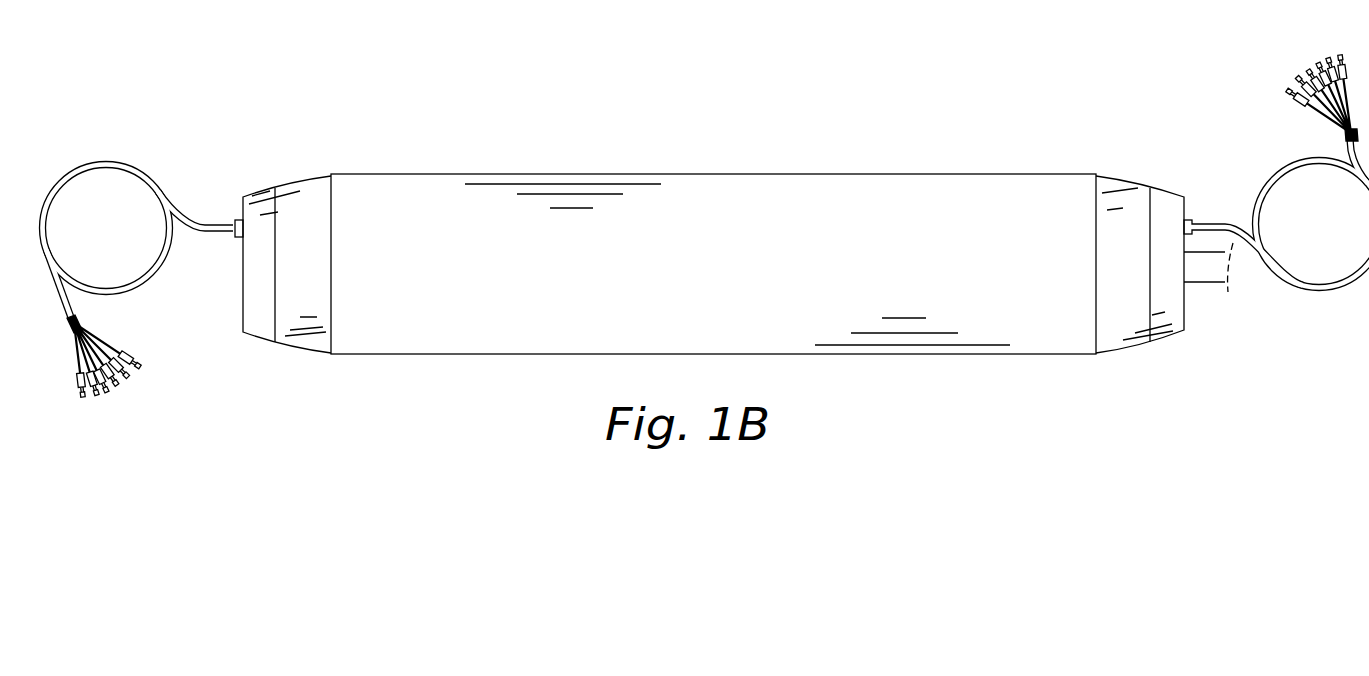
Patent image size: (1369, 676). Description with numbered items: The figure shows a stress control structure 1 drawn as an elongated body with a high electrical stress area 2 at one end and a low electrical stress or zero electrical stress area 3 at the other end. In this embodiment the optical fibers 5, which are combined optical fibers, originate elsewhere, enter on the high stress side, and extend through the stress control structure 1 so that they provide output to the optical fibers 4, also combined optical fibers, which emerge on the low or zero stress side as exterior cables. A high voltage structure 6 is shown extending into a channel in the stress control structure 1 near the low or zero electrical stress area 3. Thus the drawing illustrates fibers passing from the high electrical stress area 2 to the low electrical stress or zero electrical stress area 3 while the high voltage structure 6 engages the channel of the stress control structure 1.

The stress control structure 1 is at (718, 157).
The high electrical stress area 2 is at (378, 243).
The low electrical stress or zero electrical stress area 3 is at (1063, 315).
The optical fibers 4 is at (1285, 165).
The optical fibers 5 is at (143, 165).
The high voltage structure 6 is at (1205, 285).